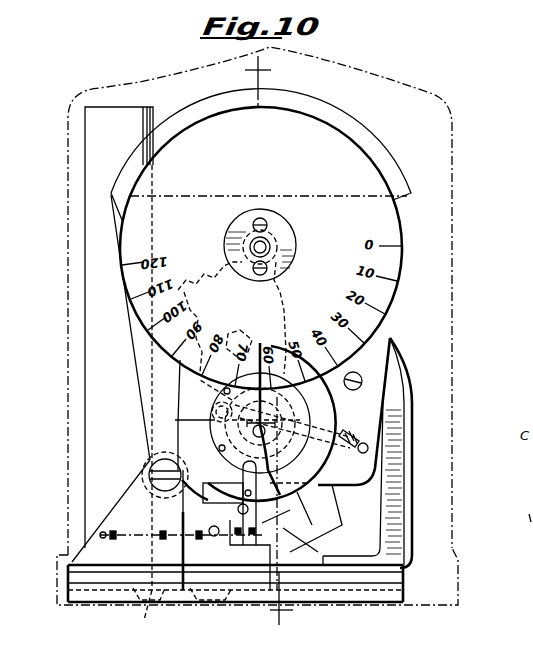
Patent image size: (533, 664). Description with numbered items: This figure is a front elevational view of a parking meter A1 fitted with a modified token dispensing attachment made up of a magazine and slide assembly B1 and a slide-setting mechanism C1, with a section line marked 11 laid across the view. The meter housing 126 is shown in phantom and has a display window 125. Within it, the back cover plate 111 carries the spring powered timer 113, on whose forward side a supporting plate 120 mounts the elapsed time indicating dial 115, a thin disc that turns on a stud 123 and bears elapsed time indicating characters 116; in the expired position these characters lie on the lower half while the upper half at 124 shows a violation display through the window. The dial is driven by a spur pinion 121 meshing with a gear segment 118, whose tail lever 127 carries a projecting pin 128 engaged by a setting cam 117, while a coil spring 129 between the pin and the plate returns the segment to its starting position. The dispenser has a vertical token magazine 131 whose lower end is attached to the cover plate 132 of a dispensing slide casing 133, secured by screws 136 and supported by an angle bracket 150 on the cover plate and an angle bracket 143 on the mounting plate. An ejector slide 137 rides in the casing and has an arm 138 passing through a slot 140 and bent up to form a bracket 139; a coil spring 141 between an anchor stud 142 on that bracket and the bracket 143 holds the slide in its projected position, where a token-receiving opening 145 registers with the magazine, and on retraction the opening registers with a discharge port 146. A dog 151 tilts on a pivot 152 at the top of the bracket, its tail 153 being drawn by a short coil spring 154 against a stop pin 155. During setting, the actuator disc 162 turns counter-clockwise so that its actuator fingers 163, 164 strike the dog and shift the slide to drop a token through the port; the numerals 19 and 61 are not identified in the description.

The section line 11- 11 is at (270, 117).
The token magazine 131 is at (97, 128).
The elapsed time indicating dial 115 is at (403, 203).
The expired condition display 124 is at (341, 144).
The display window 125 is at (405, 172).
The meter housing 126 is at (455, 110).
The parking meter A1 is at (455, 206).
The magazine and slide assembly B1 is at (66, 436).
The slide-setting mechanism C1 is at (418, 592).
The elapsed time indicating characters 116 is at (396, 282).
The supporting plate 120 is at (390, 335).
The back cover plate 111 is at (410, 462).
The screws 136 is at (412, 562).
The spur pinion 121 is at (225, 241).
The stud 123 is at (272, 245).
The gear segment 118 is at (283, 314).
The cam follower 19 is at (244, 332).
The pointer hub 61 is at (268, 428).
The spring powered timer 113 is at (302, 522).
The actuator finger 164 is at (224, 390).
The tail lever 127 is at (228, 401).
The projecting pin 128 is at (240, 414).
The coil spring 129 is at (345, 430).
The setting cam 117 is at (184, 443).
The actuator disc 162 is at (220, 448).
The actuator finger 163 is at (220, 450).
The dog 151 is at (243, 473).
The pivot 152 is at (245, 494).
The short coil spring 154 is at (240, 513).
The stop pin 155 is at (232, 530).
The coil spring 141 is at (150, 533).
The angle bracket 143 is at (122, 503).
The anchor stud 142 is at (222, 540).
The tail 153 is at (262, 530).
The bracket 139 is at (308, 508).
The angle bracket 150 is at (322, 537).
The cover plate 132 is at (68, 583).
The token-receiving opening 145 is at (108, 603).
The discharge port 146 is at (142, 624).
The ejector slide 137 is at (152, 603).
The arm 138 is at (240, 603).
The slot 140 is at (312, 585).
The dispensing slide casing 133 is at (350, 598).